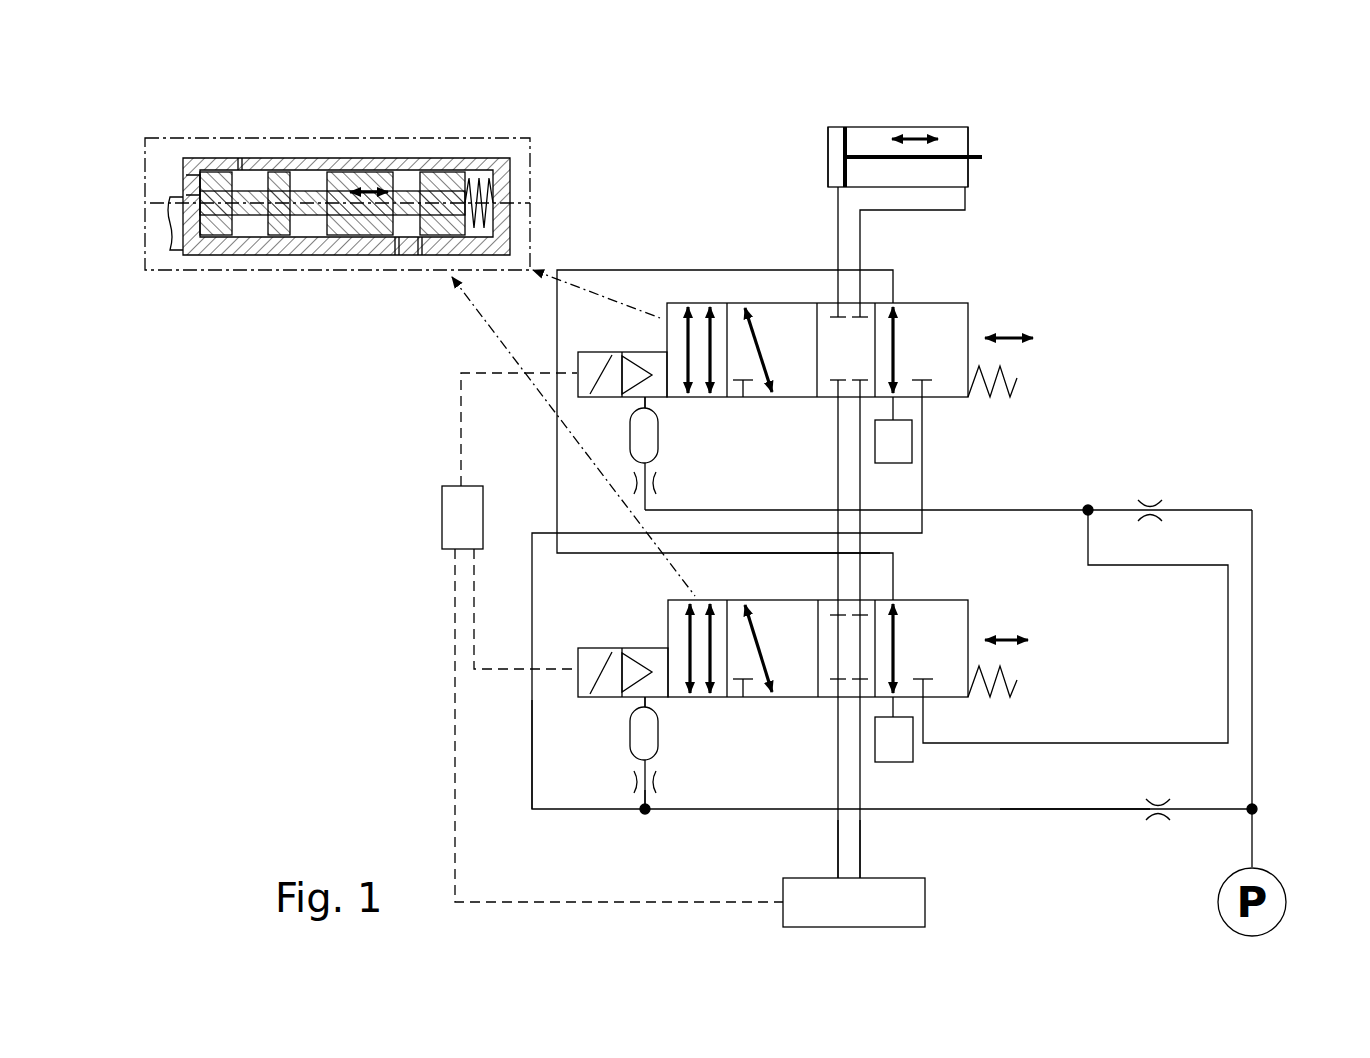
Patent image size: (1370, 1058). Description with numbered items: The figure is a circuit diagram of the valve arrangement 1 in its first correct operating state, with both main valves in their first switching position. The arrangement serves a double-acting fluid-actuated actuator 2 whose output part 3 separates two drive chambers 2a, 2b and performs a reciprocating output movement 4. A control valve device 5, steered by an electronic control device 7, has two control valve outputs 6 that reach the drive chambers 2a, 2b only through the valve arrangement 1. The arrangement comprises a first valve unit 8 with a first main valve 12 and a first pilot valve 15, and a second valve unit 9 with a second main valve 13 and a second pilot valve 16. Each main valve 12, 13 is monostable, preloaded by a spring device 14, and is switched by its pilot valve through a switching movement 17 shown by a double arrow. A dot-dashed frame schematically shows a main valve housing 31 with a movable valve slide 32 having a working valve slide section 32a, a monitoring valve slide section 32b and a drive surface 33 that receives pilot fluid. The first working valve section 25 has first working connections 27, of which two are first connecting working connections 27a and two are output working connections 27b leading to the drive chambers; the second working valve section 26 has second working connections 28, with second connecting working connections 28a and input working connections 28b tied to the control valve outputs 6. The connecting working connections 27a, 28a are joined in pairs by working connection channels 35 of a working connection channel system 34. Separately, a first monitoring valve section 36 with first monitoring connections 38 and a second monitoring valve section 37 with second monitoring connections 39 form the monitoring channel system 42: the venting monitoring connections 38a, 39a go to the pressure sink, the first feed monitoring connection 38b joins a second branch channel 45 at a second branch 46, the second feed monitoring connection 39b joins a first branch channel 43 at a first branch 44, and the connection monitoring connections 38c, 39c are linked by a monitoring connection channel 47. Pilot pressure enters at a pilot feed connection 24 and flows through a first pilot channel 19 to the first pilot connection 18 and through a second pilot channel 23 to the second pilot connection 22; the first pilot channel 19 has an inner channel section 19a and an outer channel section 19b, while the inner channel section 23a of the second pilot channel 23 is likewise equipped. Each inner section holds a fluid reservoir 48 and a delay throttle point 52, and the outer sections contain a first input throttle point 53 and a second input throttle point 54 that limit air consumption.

The valve arrangement 1 is at (1138, 378).
The fluid-actuated actuator 2 is at (952, 125).
The drive chamber 2a is at (834, 136).
The drive chamber 2b is at (965, 138).
The output part 3 is at (870, 154).
The output movement 4 is at (912, 135).
The control valve device 5 is at (854, 902).
The control valve outputs 6 is at (838, 878).
The electronic control device 7 is at (612, 637).
The first valve unit 8 is at (664, 305).
The second valve unit 9 is at (604, 735).
The first main valve 12 is at (968, 303).
The second main valve 13 is at (972, 600).
The spring device 14 is at (482, 180).
The first pilot valve 15 is at (168, 228).
The second pilot valve 16 is at (592, 645).
The switching movement 17 is at (357, 185).
The first pilot connection 18 is at (650, 403).
The first pilot channel 19 is at (731, 510).
The inner channel section 19a is at (1029, 510).
The outer channel section 19b is at (1256, 686).
The second pilot connection 22 is at (650, 702).
The second pilot channel 23 is at (1076, 812).
The inner channel section 23a is at (652, 768).
The pilot feed connection 24 is at (1258, 809).
The first working valve section 25 is at (220, 250).
The second working valve section 26 is at (672, 625).
The first working connections 27 is at (300, 165).
The first connecting working connection 27a is at (860, 400).
The output working connection 27b is at (823, 342).
The second working connections 28 is at (420, 235).
The second connecting working connection 28a is at (860, 605).
The input working connection 28b is at (860, 700).
The main valve housing 31 is at (380, 172).
The valve slide 32 is at (446, 172).
The working valve slide section 32a is at (215, 172).
The monitoring valve slide section 32b is at (405, 172).
The drive surface 33 is at (183, 182).
The working connection channel system 34 is at (872, 491).
The working connection channel 35 is at (857, 487).
The first monitoring valve section 36 is at (368, 250).
The second monitoring valve section 37 is at (972, 622).
The first monitoring connections 38 is at (903, 385).
The first venting monitoring connection 38a is at (890, 398).
The first feed monitoring connection 38b is at (905, 400).
The first connection monitoring connection 38c is at (893, 305).
The second monitoring connections 39 is at (904, 683).
The second venting monitoring connection 39a is at (890, 699).
The second feed monitoring connection 39b is at (905, 700).
The second connection monitoring connection 39c is at (895, 600).
The monitoring channel system 42 is at (555, 478).
The first branch channel 43 is at (1120, 743).
The first branch 44 is at (1088, 505).
The second branch channel 45 is at (551, 812).
The second branch 46 is at (645, 815).
The monitoring connection channel 47 is at (556, 430).
The fluid reservoir 48 is at (658, 437).
The delay throttle point 52 is at (655, 485).
The first input throttle point 53 is at (1150, 504).
The second input throttle point 54 is at (1160, 802).